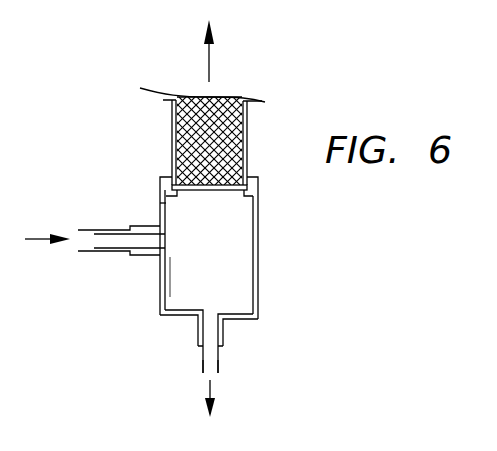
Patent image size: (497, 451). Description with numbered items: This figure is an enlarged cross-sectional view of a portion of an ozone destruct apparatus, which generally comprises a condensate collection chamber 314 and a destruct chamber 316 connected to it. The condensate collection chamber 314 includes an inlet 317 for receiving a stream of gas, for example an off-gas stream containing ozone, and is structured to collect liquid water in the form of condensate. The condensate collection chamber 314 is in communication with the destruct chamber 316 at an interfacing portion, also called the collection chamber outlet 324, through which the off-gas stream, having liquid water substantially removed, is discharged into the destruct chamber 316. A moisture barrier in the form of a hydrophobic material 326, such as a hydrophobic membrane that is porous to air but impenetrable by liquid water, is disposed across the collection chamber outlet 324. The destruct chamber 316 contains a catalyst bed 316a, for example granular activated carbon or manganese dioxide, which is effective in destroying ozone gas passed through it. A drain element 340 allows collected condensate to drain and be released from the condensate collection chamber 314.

The condensate collection chamber 314 is at (264, 258).
The destruct chamber 316 is at (230, 118).
The catalyst bed 316a is at (192, 108).
The inlet 317 is at (145, 254).
The collection chamber outlet 324 is at (207, 196).
The hydrophobic material 326 is at (223, 194).
The drain element 340 is at (228, 352).